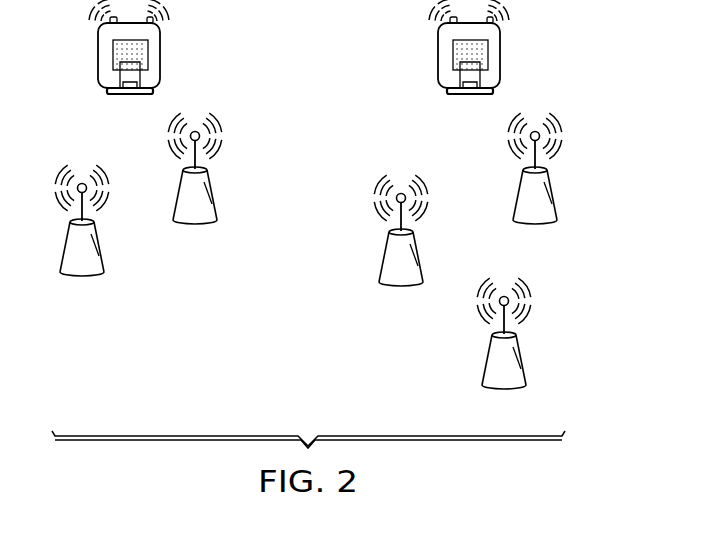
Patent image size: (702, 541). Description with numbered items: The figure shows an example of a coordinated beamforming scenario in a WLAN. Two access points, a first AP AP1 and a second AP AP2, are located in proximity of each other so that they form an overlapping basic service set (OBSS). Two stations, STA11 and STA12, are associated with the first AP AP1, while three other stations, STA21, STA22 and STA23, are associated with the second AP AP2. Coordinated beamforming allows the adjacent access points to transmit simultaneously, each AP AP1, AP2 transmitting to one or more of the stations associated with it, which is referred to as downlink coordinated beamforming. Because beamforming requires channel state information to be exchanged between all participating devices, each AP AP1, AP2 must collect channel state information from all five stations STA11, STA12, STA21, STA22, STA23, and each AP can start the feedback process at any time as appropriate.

The first AP AP1 is at (129, 65).
The second AP AP2 is at (469, 65).
The STA STA11 is at (81, 238).
The STA STA12 is at (195, 186).
The STA STA21 is at (401, 248).
The STA STA22 is at (503, 352).
The STA STA23 is at (534, 186).